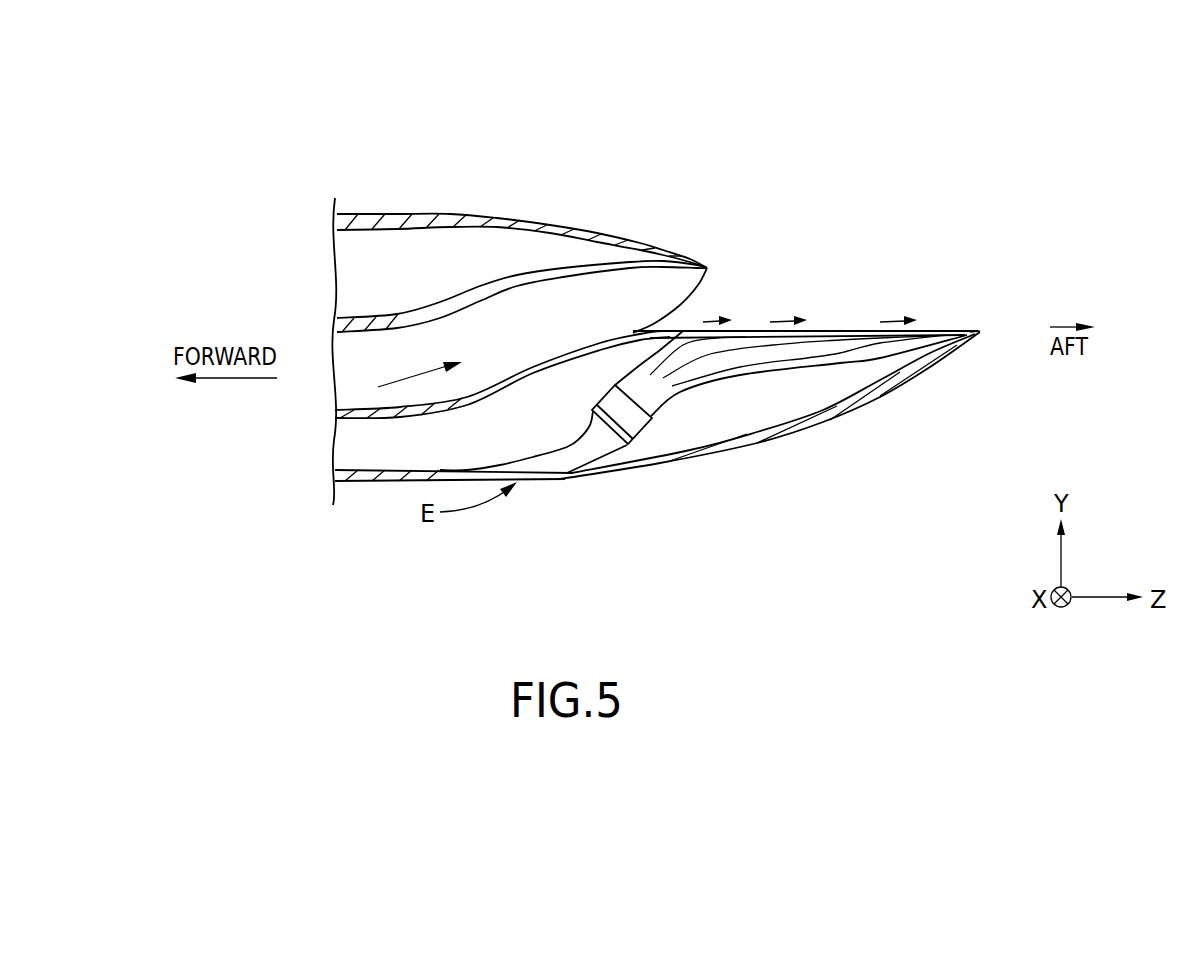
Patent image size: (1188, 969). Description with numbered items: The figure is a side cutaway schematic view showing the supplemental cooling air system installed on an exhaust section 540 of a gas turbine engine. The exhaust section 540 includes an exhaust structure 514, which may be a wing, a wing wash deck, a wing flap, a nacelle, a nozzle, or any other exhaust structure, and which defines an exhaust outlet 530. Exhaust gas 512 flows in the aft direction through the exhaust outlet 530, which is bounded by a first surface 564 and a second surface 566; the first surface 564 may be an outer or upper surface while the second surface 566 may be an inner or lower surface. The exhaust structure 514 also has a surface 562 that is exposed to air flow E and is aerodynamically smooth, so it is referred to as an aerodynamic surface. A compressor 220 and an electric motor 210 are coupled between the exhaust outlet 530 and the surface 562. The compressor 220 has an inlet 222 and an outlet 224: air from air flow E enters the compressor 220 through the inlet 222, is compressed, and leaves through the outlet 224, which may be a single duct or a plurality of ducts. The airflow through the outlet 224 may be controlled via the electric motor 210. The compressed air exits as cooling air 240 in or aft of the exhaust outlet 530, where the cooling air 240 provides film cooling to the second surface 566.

The exhaust section 540 is at (724, 121).
The exhaust outlet 530 is at (637, 307).
The first surface 564 is at (549, 285).
The second surface 566 is at (537, 363).
The exhaust gas 512 is at (408, 374).
The electric motor 210 is at (592, 412).
The inlet 222 is at (520, 458).
The outlet 224 is at (668, 395).
The compressor 220 is at (646, 446).
The surface 562 is at (856, 408).
The exhaust structure 514 is at (978, 331).
The cooling air 240 is at (708, 318).